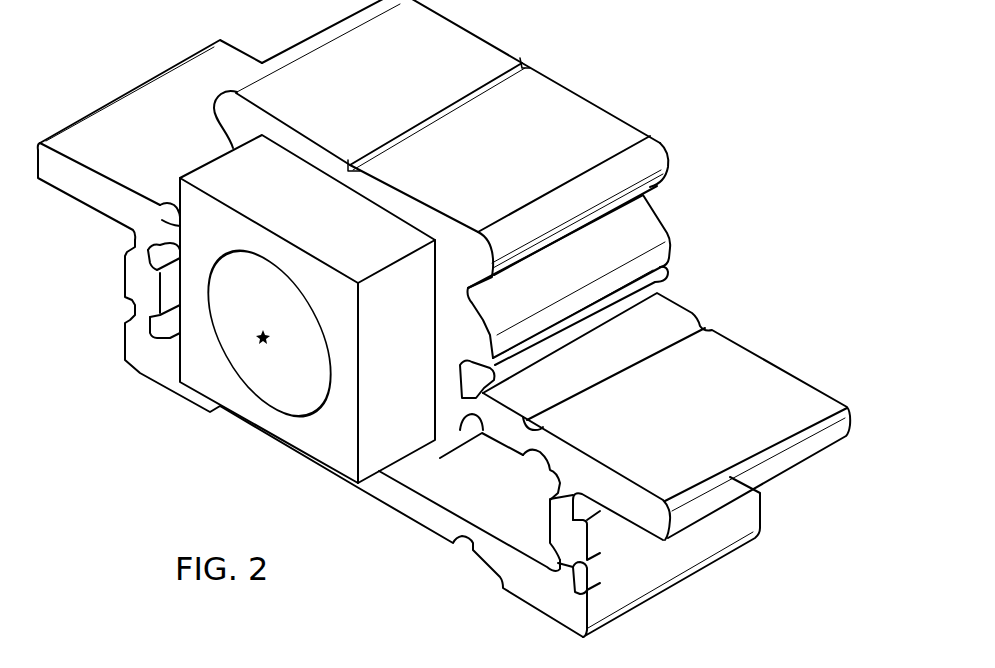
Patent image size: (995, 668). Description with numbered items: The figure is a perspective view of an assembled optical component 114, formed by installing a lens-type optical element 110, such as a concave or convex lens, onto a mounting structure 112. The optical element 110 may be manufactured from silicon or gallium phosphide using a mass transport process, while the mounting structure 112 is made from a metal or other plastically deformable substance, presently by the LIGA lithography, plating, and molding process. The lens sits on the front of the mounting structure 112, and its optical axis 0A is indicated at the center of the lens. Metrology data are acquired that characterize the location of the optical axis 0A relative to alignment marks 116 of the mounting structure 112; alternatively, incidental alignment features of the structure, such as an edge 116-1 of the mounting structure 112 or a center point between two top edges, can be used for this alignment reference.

The optical element 110 is at (324, 458).
The mounting structure 112 is at (658, 223).
The optical component 114 is at (667, 99).
The alignment mark 116 is at (524, 62).
The edge 116-1 is at (672, 166).
The optical axis 0A is at (264, 345).